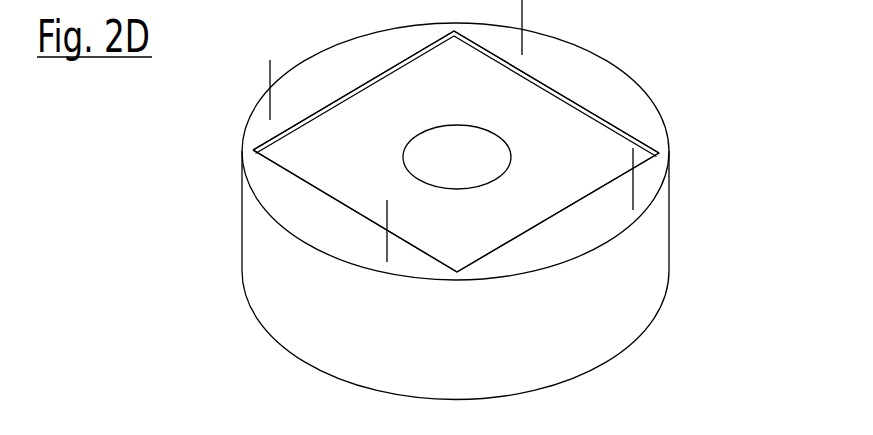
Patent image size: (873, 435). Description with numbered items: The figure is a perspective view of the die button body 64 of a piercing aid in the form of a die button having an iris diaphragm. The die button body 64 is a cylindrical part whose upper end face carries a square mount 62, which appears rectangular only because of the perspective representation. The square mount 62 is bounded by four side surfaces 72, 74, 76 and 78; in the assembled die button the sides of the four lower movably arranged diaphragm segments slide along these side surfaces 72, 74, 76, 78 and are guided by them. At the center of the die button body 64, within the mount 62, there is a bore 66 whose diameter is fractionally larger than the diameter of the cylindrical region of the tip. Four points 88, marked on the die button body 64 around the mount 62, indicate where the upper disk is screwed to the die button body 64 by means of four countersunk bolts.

The square mount 62 is at (556, 172).
The die button body 64 is at (643, 259).
The bore 66 is at (456, 136).
The side surface 72 is at (553, 217).
The side surface 74 is at (553, 87).
The side surface 76 is at (352, 88).
The side surface 78 is at (337, 203).
The points 88 is at (268, 80).